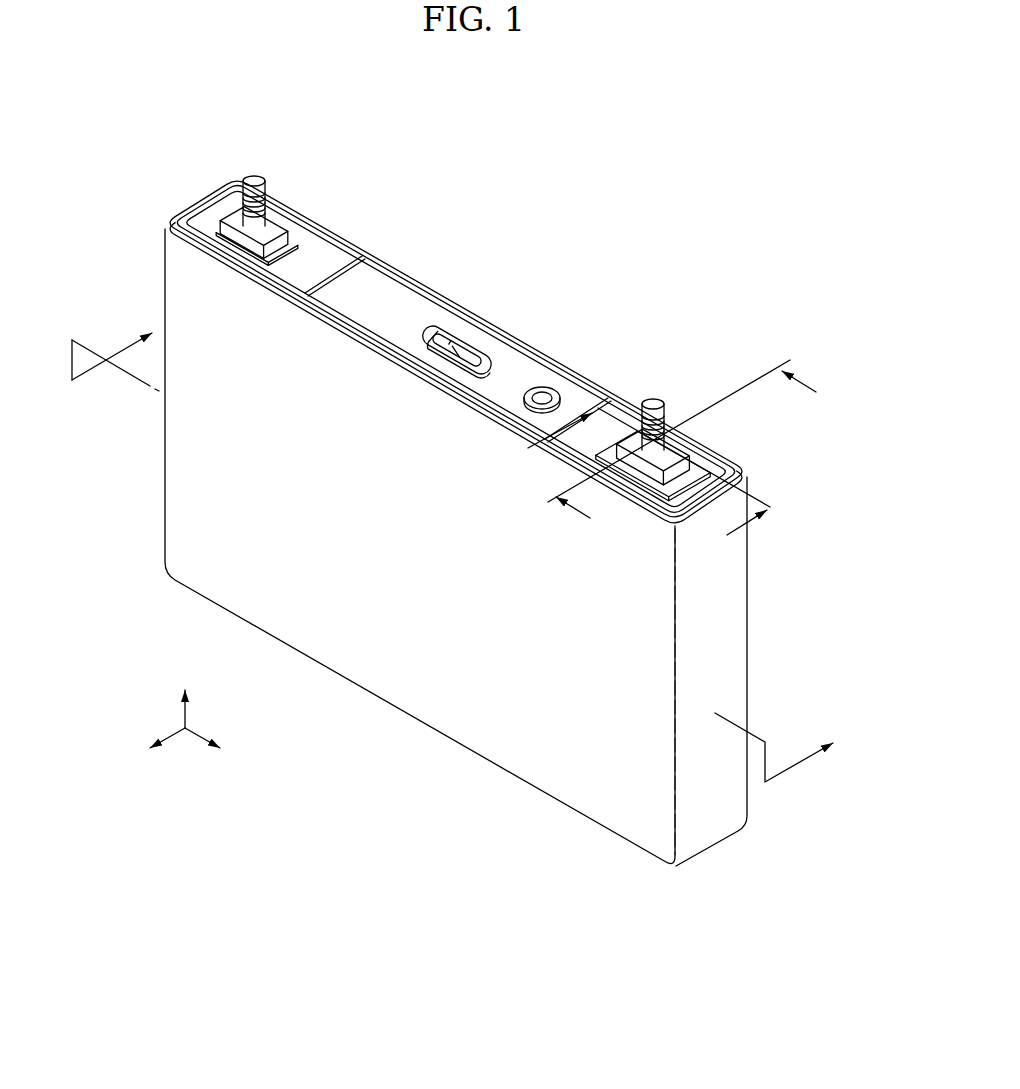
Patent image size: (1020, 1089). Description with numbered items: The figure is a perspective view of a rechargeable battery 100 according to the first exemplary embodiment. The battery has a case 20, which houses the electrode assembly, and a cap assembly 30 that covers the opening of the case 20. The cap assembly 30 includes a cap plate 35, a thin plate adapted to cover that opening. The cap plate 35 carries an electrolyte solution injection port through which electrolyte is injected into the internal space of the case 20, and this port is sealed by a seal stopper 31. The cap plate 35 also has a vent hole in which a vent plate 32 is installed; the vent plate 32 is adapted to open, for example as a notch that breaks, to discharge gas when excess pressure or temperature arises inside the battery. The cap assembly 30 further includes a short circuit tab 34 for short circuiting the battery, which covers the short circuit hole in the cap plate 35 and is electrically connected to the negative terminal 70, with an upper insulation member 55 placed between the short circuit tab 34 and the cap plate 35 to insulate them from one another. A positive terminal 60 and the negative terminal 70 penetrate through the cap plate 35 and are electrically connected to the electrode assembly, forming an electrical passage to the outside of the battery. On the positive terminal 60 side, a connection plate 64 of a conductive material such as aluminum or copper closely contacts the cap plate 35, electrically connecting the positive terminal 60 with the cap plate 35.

The rechargeable battery 100 is at (661, 152).
The case 20 is at (411, 703).
The cap assembly 30 is at (413, 299).
The seal stopper 31 is at (543, 390).
The vent plate 32 is at (462, 347).
The short circuit tab 34 is at (305, 255).
The cap plate 35 is at (433, 317).
The upper insulation member 55 is at (363, 247).
The positive terminal 60 is at (661, 396).
The connection plate 64 is at (697, 463).
The negative terminal 70 is at (264, 172).